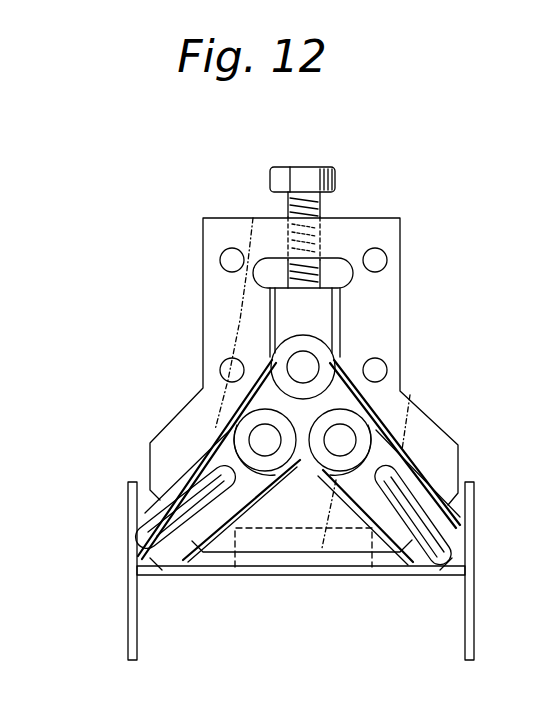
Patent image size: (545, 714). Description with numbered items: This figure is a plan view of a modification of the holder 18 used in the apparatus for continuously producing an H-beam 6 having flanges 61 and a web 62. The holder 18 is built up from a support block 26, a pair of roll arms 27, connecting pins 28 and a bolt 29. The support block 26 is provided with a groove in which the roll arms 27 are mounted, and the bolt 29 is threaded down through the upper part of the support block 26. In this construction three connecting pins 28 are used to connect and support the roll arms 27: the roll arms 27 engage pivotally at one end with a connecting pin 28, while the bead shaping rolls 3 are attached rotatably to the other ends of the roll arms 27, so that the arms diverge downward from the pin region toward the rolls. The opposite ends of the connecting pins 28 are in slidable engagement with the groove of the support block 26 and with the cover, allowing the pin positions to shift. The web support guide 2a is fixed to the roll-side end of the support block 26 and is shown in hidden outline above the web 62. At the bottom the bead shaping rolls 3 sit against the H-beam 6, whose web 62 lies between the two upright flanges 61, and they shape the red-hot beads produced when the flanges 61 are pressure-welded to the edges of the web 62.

The holder 18 is at (183, 229).
The support block 26 is at (400, 296).
The roll arms 27 is at (208, 455).
The connecting pin 28 is at (292, 365).
The bolt 29 is at (300, 166).
The web support guide 2a is at (302, 571).
The bead shaping rolls 3 is at (160, 564).
The H-beam 6 is at (123, 580).
The flanges 61 is at (137, 656).
The web 62 is at (228, 575).